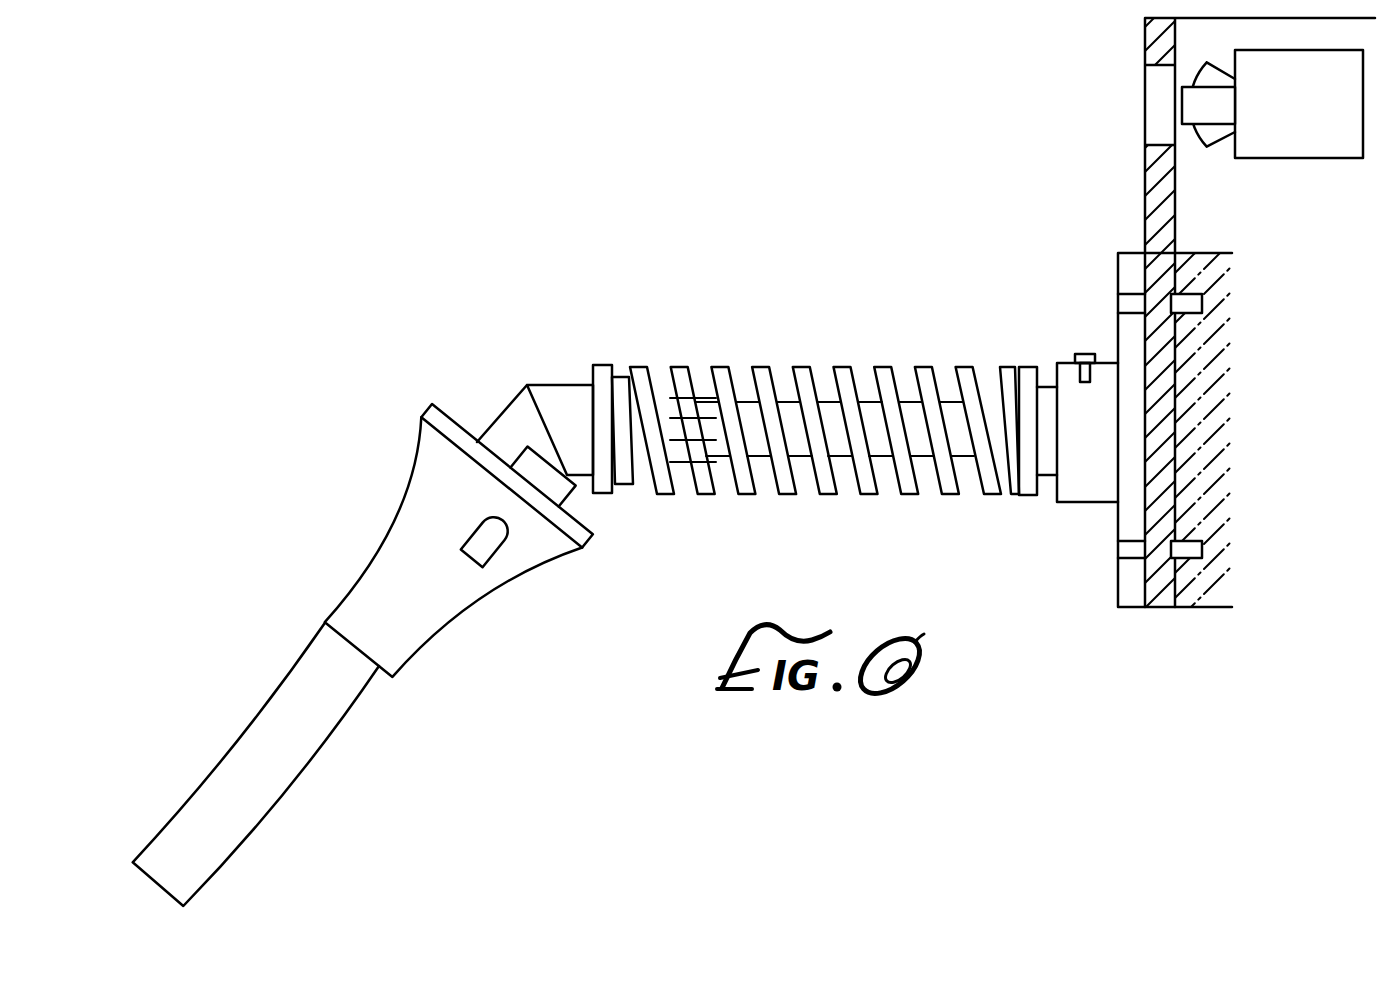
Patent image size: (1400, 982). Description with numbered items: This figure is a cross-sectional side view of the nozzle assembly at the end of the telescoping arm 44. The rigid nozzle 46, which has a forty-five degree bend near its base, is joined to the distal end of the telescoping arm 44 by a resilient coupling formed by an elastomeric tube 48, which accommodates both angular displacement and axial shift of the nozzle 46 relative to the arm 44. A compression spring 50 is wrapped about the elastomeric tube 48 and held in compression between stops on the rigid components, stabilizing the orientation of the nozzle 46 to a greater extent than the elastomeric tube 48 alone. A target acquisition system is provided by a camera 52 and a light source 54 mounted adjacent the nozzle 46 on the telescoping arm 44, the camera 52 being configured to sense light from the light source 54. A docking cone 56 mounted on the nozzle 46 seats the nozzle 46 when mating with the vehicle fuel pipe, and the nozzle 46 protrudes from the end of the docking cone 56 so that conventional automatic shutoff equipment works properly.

The telescoping arm 44 is at (1205, 608).
The nozzle 46 is at (332, 738).
The elastomeric tube 48 is at (822, 386).
The compression spring 50 is at (886, 366).
The camera 52 is at (1281, 116).
The light source 54 is at (1217, 145).
The docking cone 56 is at (408, 470).